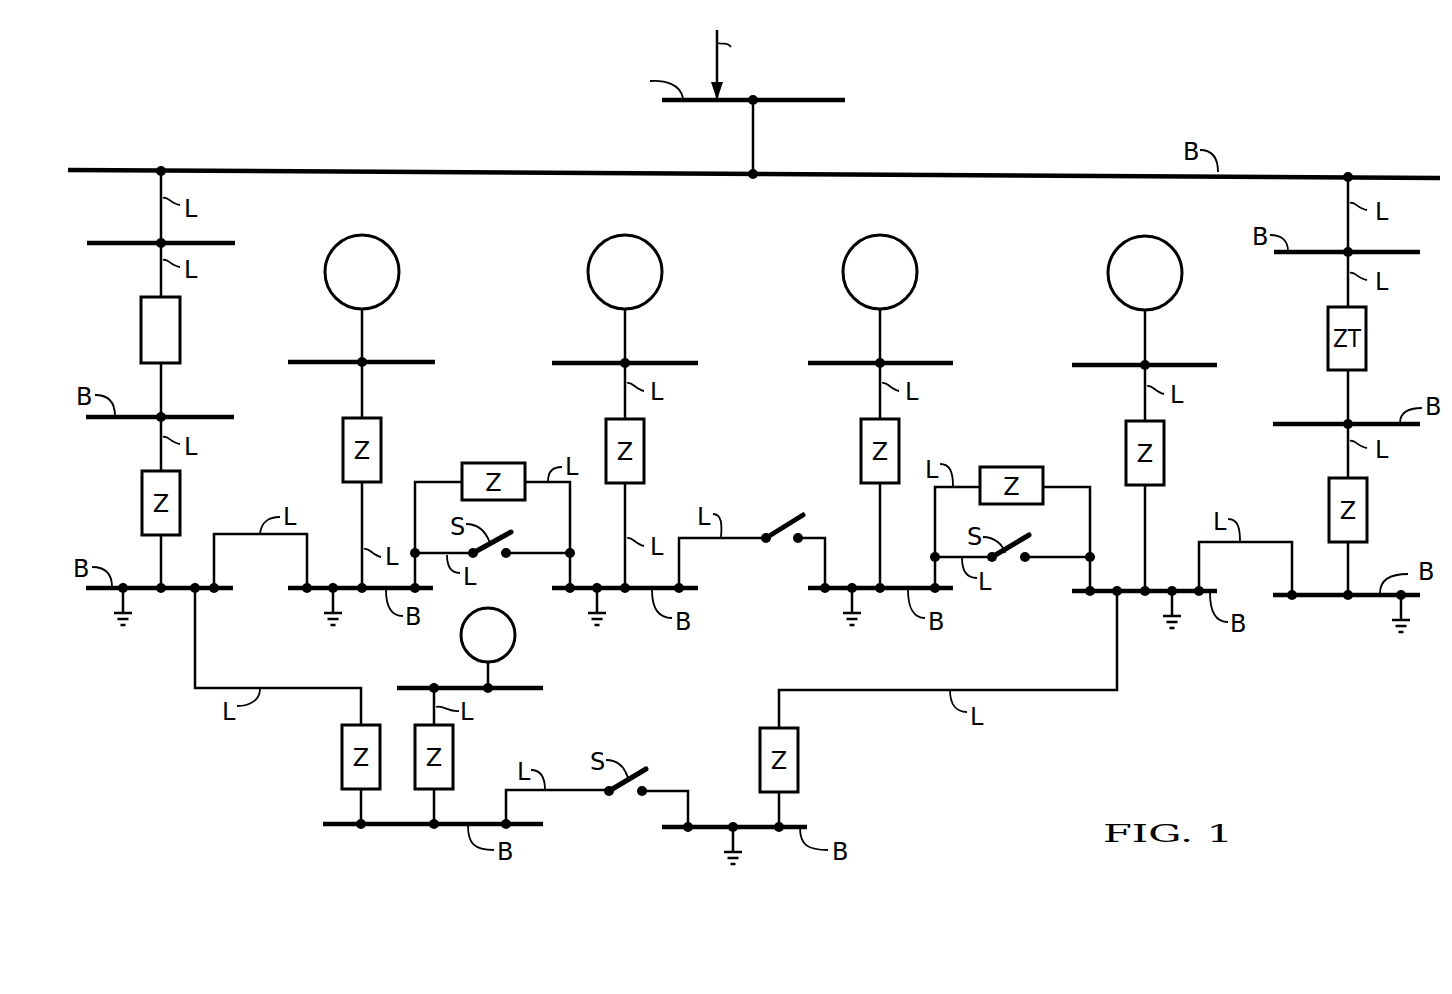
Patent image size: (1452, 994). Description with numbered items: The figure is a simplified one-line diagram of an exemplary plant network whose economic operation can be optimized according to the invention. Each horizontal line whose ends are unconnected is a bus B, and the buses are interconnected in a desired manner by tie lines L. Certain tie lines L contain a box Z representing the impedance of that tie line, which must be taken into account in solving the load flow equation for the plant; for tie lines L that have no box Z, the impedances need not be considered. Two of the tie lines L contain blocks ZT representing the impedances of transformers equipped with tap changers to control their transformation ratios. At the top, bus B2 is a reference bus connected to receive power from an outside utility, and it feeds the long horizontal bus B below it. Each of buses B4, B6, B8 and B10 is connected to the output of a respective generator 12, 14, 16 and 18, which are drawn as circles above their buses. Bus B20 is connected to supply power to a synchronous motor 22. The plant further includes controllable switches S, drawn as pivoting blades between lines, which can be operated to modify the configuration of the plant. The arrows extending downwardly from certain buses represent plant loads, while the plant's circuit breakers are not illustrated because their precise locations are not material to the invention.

The generator 12 is at (362, 272).
The generator 14 is at (625, 272).
The generator 16 is at (880, 272).
The generator 18 is at (1145, 273).
The synchronous motor 22 is at (466, 646).
The reference bus B2 is at (820, 100).
The bus B4 is at (418, 361).
The bus B6 is at (680, 362).
The bus B8 is at (935, 362).
The bus B10 is at (1197, 364).
The bus B20 is at (530, 688).
The bus B is at (115, 242).
The tie line L is at (753, 135).
The controllable switch S is at (788, 530).
The impedance box Z is at (362, 450).
The transformer impedance block ZT is at (160, 330).